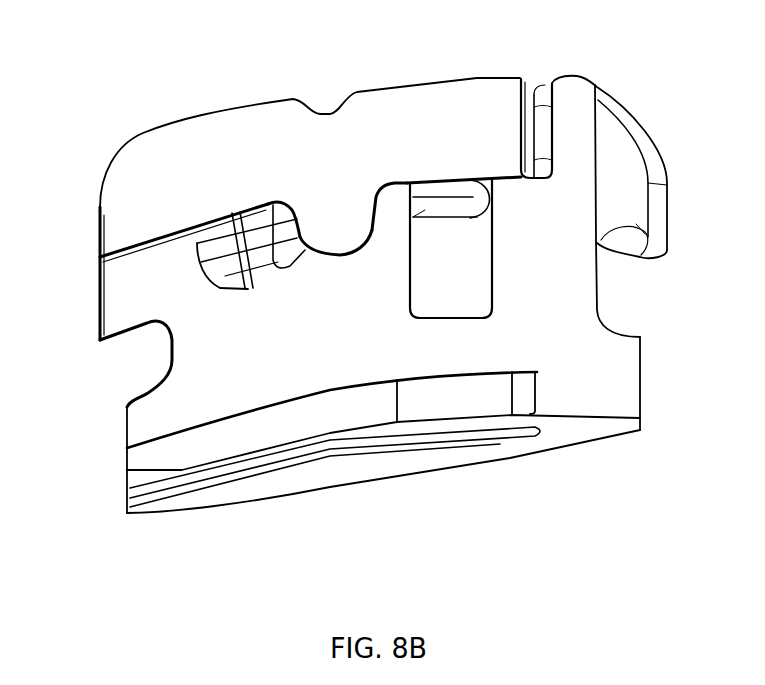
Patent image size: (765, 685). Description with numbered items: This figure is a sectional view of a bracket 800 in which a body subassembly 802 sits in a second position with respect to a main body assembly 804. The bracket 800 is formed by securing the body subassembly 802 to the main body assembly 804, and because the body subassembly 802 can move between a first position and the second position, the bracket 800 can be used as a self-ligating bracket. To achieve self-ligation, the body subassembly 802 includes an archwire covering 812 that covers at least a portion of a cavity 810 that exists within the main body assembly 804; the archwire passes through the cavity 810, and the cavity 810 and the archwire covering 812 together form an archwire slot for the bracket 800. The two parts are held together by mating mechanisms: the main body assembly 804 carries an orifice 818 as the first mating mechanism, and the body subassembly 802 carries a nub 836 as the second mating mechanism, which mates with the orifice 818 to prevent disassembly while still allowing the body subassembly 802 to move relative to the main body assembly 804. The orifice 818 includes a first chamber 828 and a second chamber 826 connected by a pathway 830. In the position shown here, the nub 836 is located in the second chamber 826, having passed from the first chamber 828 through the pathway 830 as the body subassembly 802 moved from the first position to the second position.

The bracket 800 is at (118, 109).
The body subassembly 802 is at (233, 110).
The main body assembly 804 is at (643, 385).
The cavity 810 is at (471, 280).
The archwire covering 812 is at (477, 78).
The orifice 818 is at (202, 258).
The second chamber 826 is at (375, 258).
The first chamber 828 is at (233, 291).
The pathway 830 is at (296, 276).
The nub 836 is at (357, 264).